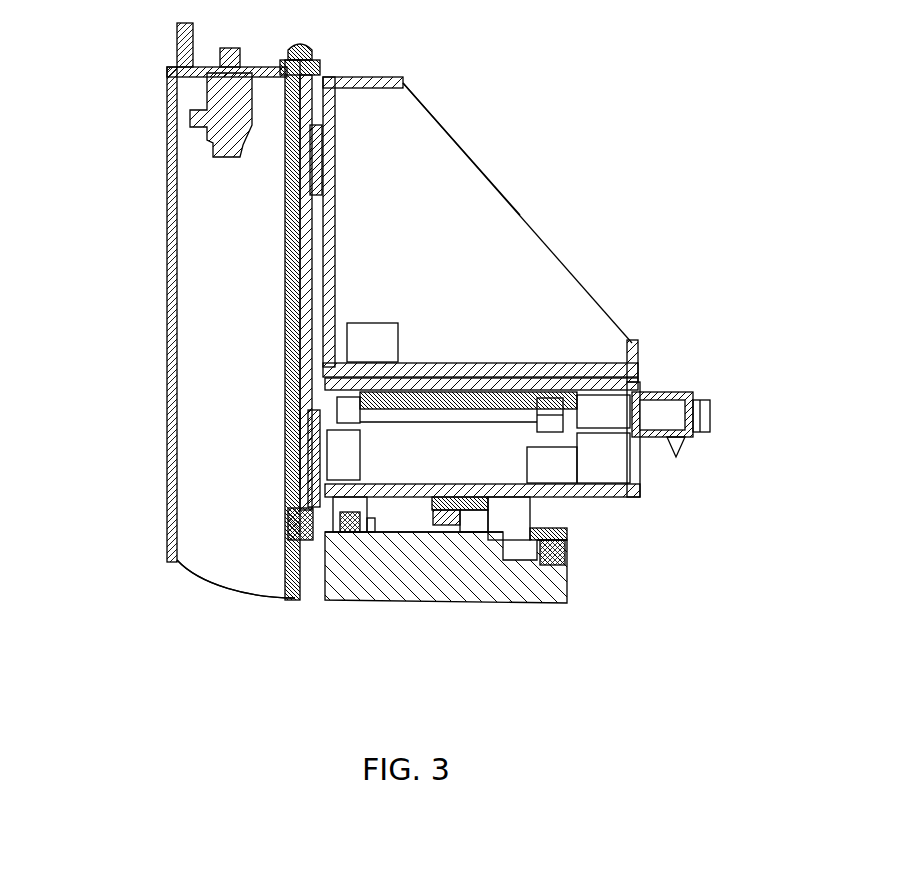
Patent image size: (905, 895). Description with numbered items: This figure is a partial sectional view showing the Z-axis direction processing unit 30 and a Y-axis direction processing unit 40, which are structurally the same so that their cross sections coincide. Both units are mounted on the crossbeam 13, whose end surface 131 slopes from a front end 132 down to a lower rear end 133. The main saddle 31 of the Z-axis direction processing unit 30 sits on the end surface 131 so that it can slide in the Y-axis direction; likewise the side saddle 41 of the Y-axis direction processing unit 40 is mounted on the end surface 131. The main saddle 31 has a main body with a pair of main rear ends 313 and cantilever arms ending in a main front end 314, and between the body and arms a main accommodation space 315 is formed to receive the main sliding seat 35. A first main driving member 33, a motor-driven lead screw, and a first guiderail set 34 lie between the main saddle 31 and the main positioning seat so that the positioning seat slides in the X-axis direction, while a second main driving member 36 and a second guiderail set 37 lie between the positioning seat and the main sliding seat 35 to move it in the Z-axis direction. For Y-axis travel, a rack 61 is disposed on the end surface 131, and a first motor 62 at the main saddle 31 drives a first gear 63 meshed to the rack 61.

The main sliding seat 35 is at (168, 86).
The second main driving member 36 is at (335, 108).
The Y-axis direction processing unit 40 is at (460, 147).
The Z-axis direction processing unit 30 is at (510, 188).
The second guiderail set 37 is at (317, 238).
The first guiderail set 34 is at (460, 365).
The first main driving member 33 is at (585, 410).
The main accommodation space 315 is at (312, 423).
The main front end 314 is at (320, 470).
The main rear end 313 is at (643, 456).
The side saddle 41 is at (643, 477).
The main saddle 31 is at (643, 487).
The first motor 62 is at (510, 497).
The first gear 63 is at (448, 520).
The rack 61 is at (492, 542).
The crossbeam 13 is at (352, 572).
The end surface 131 is at (399, 533).
The front end 132 is at (300, 540).
The rear end 133 is at (567, 565).